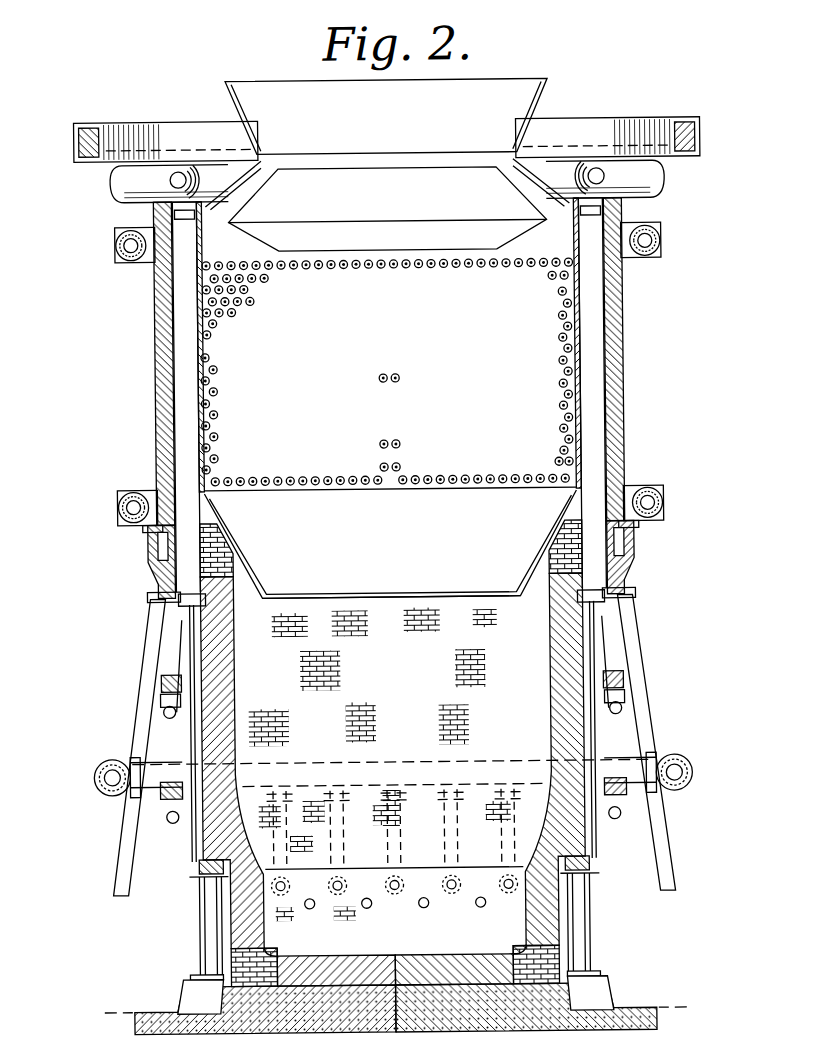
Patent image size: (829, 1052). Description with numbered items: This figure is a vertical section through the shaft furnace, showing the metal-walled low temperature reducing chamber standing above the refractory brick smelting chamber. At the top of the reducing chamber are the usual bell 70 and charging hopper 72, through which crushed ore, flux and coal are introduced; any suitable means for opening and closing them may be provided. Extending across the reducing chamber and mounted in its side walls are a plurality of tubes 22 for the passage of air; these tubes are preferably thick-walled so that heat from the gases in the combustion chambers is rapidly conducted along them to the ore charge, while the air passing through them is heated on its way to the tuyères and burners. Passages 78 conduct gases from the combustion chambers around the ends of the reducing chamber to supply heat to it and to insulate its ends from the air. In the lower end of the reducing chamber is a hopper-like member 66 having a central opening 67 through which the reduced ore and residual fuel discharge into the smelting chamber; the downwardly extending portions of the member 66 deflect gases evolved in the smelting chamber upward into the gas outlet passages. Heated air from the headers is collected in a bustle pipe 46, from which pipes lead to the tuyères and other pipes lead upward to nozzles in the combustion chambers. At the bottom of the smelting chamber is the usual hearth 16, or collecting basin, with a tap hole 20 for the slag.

The charging hopper 72 is at (386, 116).
The bell 70 is at (387, 208).
The tubes 22 is at (203, 326).
The passages 78 is at (187, 392).
The hopper-like member 66 is at (248, 566).
The central opening 67 is at (394, 563).
The bustle pipe 46 is at (113, 757).
The hearth 16 is at (272, 940).
The tap hole 20 is at (478, 909).